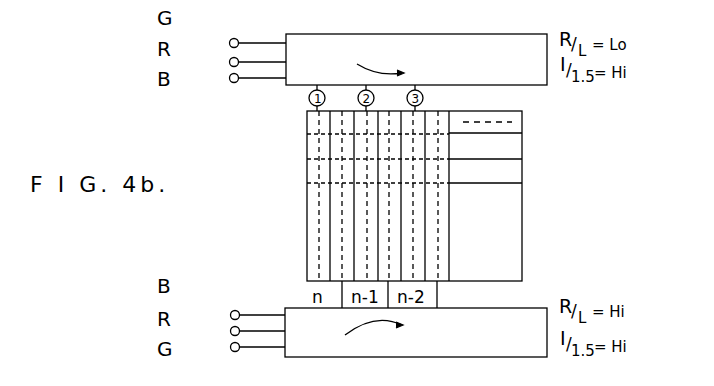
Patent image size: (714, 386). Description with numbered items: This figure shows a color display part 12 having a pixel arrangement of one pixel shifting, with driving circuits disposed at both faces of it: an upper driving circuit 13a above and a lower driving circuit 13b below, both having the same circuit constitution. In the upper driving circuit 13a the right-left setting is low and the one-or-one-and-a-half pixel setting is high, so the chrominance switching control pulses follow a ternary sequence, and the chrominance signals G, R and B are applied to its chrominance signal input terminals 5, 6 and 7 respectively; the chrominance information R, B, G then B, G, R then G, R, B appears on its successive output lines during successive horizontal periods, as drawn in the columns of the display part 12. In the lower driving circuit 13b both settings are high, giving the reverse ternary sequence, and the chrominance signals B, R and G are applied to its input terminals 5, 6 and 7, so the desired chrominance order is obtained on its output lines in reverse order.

The chrominance signal input terminal 5 is at (229, 41).
The chrominance signal input terminal 6 is at (229, 60).
The chrominance signal input terminal 7 is at (229, 77).
The color display part 12 is at (513, 233).
The upper driving circuit 13a is at (413, 47).
The lower driving circuit 13b is at (455, 352).